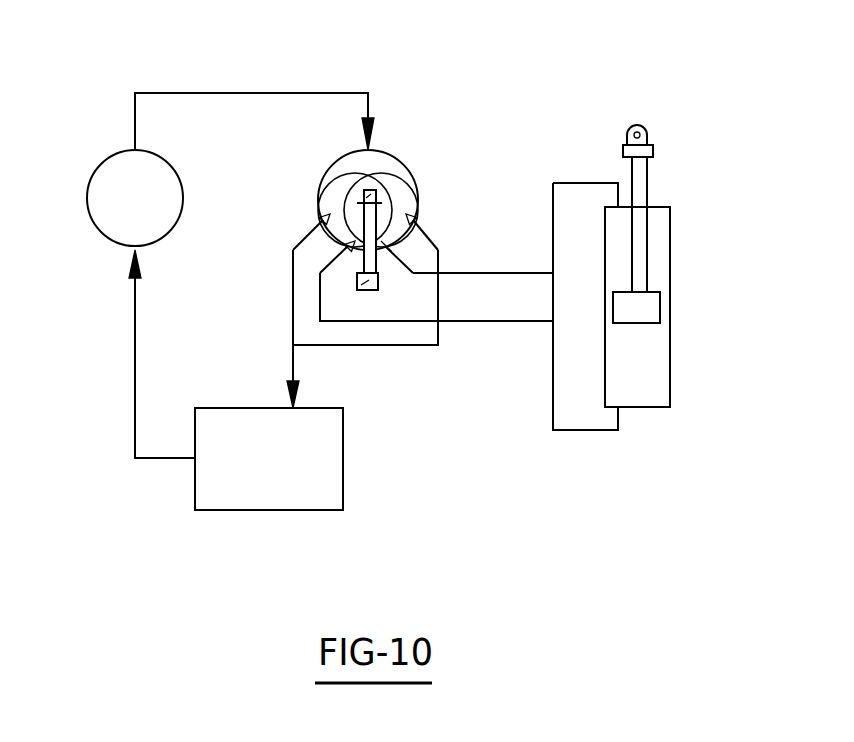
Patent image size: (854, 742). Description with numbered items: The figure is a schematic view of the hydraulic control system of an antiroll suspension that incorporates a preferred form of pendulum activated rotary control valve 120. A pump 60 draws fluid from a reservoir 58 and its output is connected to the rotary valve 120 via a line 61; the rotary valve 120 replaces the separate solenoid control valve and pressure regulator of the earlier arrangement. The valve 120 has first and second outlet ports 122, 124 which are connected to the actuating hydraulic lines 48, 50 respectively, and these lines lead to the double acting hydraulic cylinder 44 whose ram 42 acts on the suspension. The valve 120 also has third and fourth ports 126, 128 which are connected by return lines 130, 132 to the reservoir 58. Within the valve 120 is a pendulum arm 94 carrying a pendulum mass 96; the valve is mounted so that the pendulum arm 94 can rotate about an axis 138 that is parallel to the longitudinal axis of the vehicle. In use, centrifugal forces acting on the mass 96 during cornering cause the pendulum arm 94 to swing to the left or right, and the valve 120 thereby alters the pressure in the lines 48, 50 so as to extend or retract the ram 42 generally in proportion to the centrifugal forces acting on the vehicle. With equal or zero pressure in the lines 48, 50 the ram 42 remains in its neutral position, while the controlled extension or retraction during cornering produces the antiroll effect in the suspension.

The ram 42 is at (640, 172).
The double acting hydraulic cylinder 44 is at (670, 350).
The actuating hydraulic line 48 is at (517, 274).
The actuating hydraulic line 50 is at (500, 322).
The reservoir 58 is at (330, 475).
The pump 60 is at (104, 162).
The line 61 is at (220, 93).
The pendulum arm 94 is at (355, 264).
The pendulum mass 96 is at (358, 288).
The rotary control valve 120 is at (391, 161).
The first outlet port 122 is at (380, 176).
The second outlet port 124 is at (330, 190).
The third port 126 is at (318, 206).
The fourth port 128 is at (414, 206).
The line 130 is at (292, 312).
The line 132 is at (388, 346).
The axis 138 is at (364, 192).